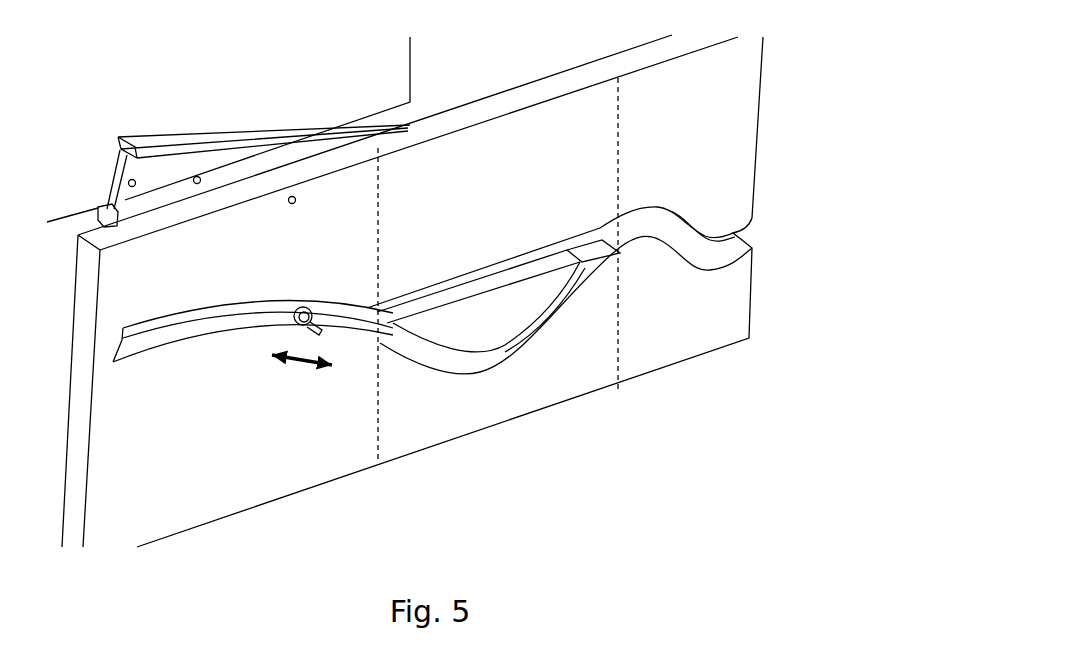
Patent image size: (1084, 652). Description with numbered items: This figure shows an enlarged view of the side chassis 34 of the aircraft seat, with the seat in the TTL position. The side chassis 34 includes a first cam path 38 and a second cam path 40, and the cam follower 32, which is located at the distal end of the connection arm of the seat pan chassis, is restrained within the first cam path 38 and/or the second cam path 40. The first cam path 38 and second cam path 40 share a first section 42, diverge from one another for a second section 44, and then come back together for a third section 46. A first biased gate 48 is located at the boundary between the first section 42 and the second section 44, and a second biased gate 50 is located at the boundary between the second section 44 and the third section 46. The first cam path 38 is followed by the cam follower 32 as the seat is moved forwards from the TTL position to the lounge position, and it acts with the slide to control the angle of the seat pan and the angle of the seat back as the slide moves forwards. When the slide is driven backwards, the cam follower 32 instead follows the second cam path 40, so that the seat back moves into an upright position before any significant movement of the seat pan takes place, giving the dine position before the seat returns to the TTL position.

The cam follower 32 is at (290, 312).
The side chassis 34 is at (722, 290).
The first cam path 38 is at (495, 367).
The second cam path 40 is at (503, 275).
The first section 42 is at (100, 282).
The second section 44 is at (613, 107).
The third section 46 is at (618, 100).
The first biased gate 48 is at (387, 310).
The second biased gate 50 is at (602, 258).